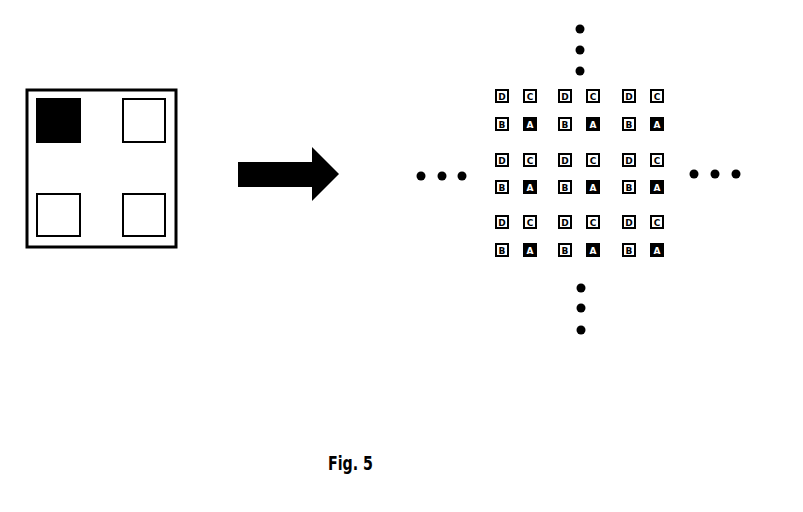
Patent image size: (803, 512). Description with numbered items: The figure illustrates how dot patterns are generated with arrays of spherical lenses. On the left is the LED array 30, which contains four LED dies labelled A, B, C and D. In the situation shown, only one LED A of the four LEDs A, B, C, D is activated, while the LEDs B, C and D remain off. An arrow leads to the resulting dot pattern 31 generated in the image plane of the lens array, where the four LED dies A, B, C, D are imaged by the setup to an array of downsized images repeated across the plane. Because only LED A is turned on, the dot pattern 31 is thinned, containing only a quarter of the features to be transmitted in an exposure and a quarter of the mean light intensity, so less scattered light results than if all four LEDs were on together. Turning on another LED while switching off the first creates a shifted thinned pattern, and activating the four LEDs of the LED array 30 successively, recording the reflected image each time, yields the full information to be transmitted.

The LED array 30 is at (101, 147).
The dot pattern 31 is at (579, 180).
The LED A is at (58, 120).
The LED B is at (144, 120).
The LED C is at (58, 215).
The LED D is at (144, 215).